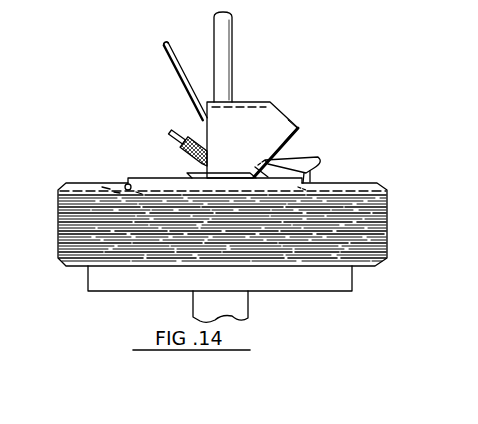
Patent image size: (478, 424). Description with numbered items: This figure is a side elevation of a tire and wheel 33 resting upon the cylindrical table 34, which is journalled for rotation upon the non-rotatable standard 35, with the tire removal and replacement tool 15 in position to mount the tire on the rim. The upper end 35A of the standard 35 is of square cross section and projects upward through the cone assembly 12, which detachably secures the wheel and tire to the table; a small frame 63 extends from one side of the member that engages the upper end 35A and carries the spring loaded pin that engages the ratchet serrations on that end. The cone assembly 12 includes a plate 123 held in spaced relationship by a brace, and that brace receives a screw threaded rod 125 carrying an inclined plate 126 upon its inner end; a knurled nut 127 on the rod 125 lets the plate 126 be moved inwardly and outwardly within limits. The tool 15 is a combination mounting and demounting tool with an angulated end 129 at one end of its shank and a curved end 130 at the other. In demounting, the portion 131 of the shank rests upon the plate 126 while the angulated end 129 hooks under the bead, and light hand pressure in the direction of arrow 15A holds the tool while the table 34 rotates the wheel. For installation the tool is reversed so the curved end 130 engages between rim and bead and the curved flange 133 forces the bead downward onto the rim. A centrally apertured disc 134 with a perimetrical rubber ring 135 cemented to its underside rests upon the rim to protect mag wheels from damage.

The cone assembly 12 is at (305, 148).
The tire removal and replacement tool 15 is at (172, 84).
The arrow 15A is at (166, 18).
The tire and wheel 33 is at (388, 222).
The cylindrical table 34 is at (340, 278).
The standard 35 is at (230, 307).
The upper end of the standard 35A is at (223, 28).
The small frame 63 is at (283, 114).
The plate 123 is at (249, 121).
The screw threaded rod 125 is at (171, 129).
The plate 126 is at (262, 162).
The knurled nut 127 is at (180, 144).
The angulated end 129 is at (158, 44).
The curved end 130 is at (317, 174).
The portion of the shank 131 is at (172, 68).
The curved flange 133 is at (318, 164).
The centrally apertured disc 134 is at (131, 176).
The perimetrical rubber ring 135 is at (97, 182).